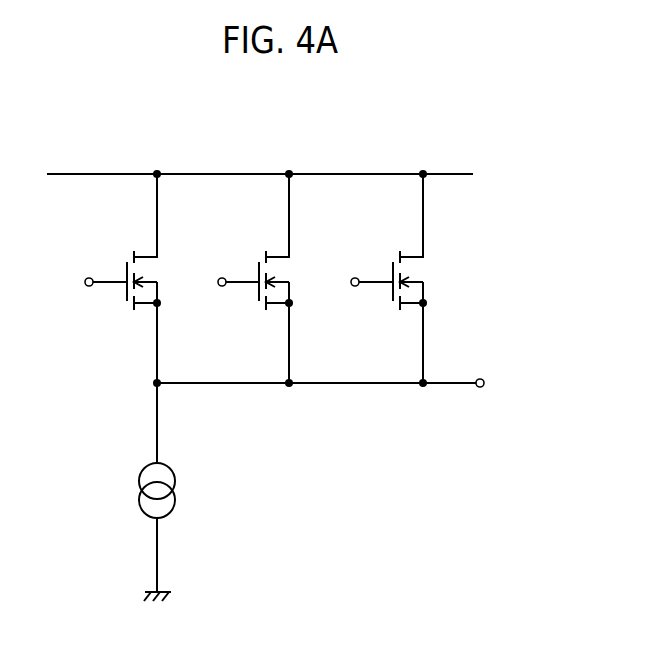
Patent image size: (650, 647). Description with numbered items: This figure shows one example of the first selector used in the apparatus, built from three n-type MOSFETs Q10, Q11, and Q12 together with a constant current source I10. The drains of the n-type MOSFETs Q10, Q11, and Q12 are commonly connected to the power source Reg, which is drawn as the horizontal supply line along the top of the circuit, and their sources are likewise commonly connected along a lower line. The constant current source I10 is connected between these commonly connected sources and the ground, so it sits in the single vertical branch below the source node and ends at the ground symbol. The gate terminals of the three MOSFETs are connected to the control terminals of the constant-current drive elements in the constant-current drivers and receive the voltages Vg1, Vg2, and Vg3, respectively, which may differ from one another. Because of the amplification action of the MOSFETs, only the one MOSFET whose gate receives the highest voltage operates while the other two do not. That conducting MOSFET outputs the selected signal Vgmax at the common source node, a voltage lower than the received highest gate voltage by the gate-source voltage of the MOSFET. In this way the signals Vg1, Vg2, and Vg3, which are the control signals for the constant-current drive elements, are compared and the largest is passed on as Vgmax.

The n-type MOSFET Q10 is at (119, 278).
The n-type MOSFET Q11 is at (251, 278).
The n-type MOSFET Q12 is at (385, 278).
The constant current source I10 is at (182, 487).
The power source Reg is at (260, 162).
The voltage Vg1 is at (97, 297).
The voltage Vg2 is at (230, 297).
The voltage Vg3 is at (364, 297).
The selected signal Vgmax is at (501, 398).